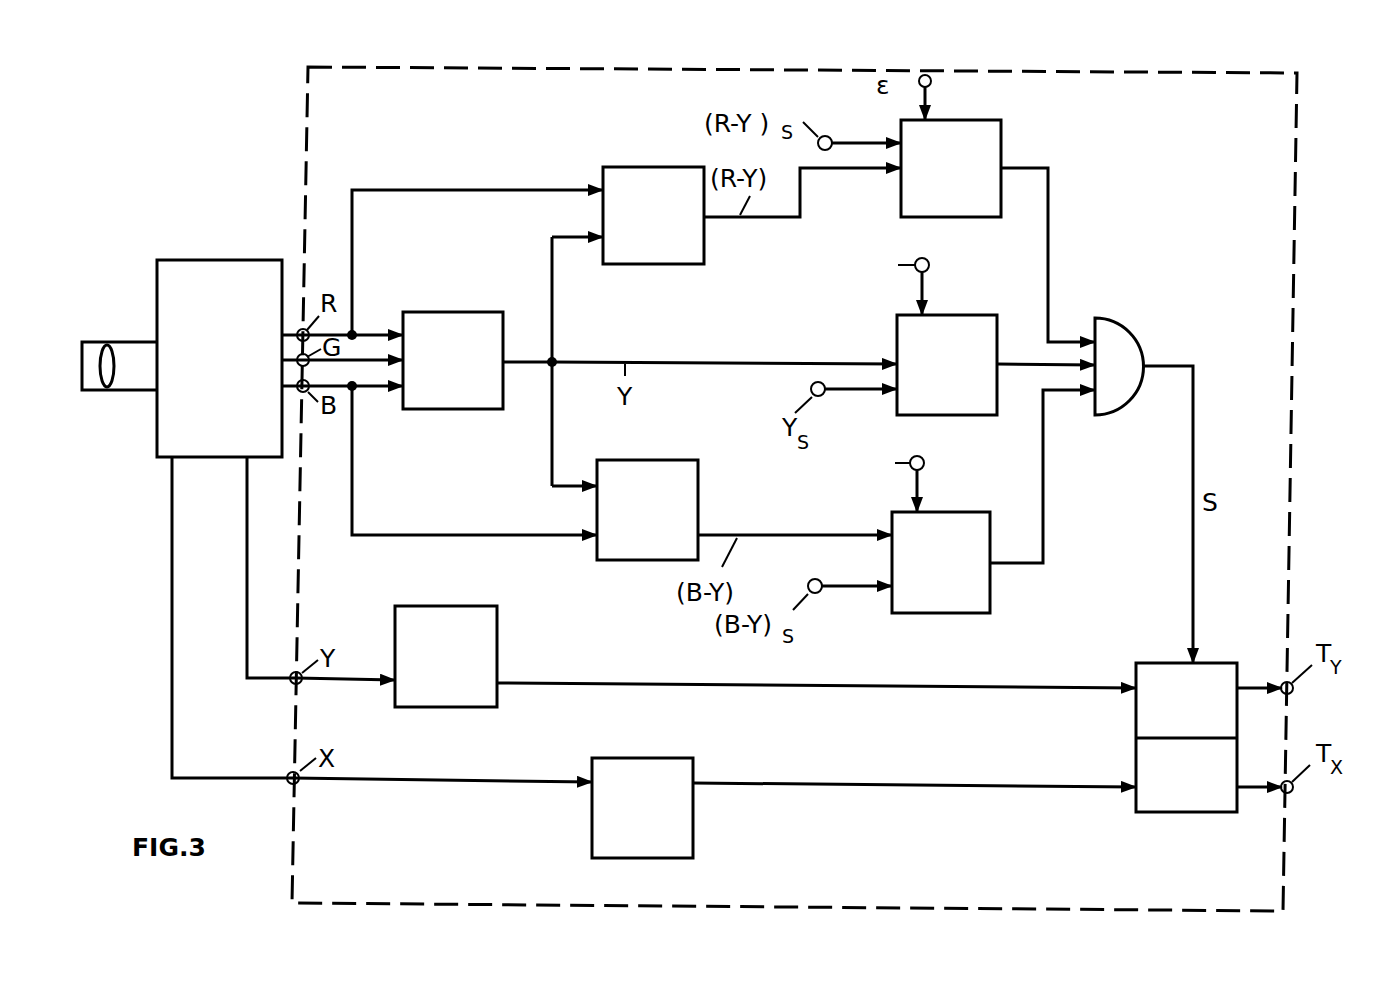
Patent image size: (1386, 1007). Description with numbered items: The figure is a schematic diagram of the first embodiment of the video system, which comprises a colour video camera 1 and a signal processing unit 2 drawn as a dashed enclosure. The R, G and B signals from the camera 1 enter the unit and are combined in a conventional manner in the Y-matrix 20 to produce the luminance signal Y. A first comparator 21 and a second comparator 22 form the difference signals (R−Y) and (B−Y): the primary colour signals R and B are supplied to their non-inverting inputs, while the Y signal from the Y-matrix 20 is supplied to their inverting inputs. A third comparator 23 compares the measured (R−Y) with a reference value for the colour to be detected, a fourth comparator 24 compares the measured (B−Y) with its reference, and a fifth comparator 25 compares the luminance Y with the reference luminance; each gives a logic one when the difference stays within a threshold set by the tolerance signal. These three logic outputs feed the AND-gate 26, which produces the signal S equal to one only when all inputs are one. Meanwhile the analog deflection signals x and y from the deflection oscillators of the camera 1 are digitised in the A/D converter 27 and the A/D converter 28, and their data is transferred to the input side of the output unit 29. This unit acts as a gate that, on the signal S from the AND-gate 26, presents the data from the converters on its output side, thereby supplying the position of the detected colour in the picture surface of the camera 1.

The colour video camera 1 is at (182, 260).
The signal processing unit 2 is at (742, 70).
The Y-matrix 20 is at (428, 312).
The first comparator 21 is at (630, 167).
The second comparator 22 is at (624, 460).
The third comparator 23 is at (987, 120).
The fourth comparator 24 is at (978, 512).
The fifth comparator 25 is at (983, 315).
The AND-gate 26 is at (1137, 338).
The A/D converter 27 is at (423, 606).
The A/D converter 28 is at (618, 758).
The output unit 29 is at (1147, 663).